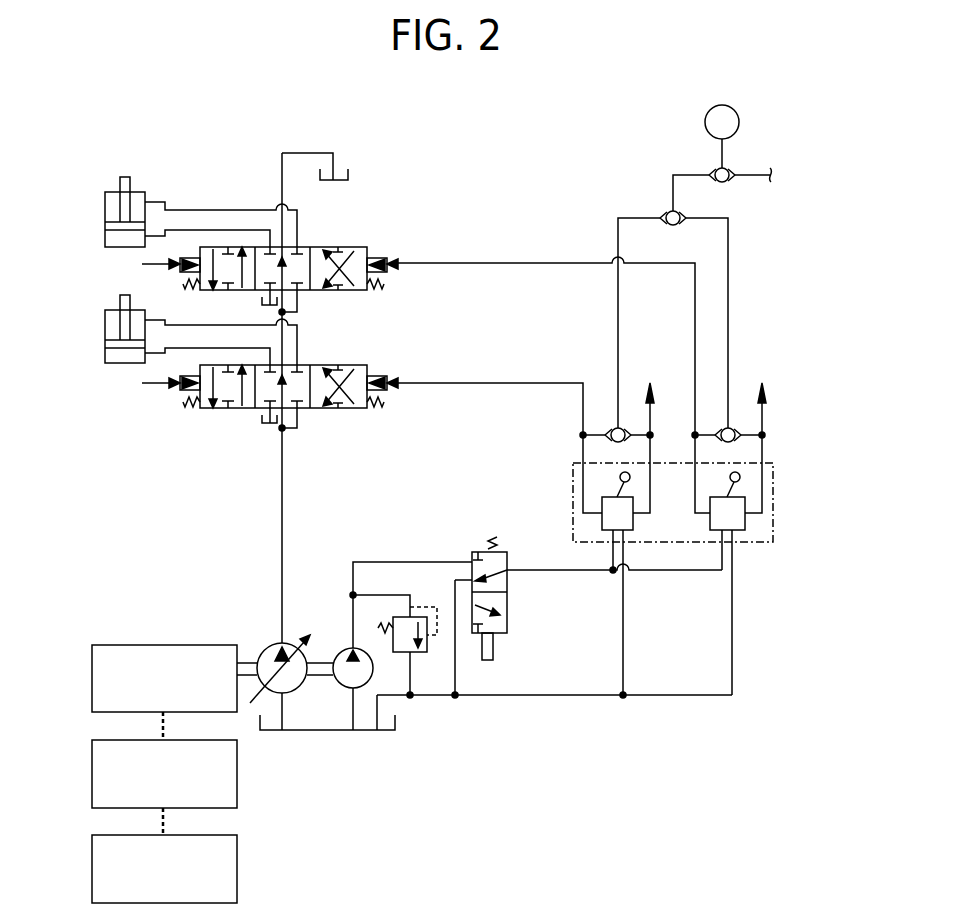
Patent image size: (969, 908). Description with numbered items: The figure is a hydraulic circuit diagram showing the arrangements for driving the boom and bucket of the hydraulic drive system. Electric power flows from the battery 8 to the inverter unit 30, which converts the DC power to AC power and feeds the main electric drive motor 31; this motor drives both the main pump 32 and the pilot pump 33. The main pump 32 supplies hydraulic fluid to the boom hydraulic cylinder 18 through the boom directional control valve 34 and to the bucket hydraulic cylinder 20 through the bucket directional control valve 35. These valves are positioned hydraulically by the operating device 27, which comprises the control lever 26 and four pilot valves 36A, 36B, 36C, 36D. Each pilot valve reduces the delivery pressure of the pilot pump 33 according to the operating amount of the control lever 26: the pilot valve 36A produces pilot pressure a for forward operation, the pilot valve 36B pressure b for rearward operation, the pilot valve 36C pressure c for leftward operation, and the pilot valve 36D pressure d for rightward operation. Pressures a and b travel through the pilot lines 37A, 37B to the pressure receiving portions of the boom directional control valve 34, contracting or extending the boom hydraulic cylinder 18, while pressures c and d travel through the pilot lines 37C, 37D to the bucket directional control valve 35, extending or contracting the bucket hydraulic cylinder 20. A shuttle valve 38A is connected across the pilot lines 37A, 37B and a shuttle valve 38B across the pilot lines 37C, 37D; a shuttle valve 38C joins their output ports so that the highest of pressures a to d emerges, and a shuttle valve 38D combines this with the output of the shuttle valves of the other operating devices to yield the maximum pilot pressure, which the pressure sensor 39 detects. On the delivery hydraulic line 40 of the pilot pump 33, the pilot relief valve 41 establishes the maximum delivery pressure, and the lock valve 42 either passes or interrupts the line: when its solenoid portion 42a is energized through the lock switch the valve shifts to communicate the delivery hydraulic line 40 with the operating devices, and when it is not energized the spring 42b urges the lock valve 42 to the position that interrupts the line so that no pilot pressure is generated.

The battery 8 is at (92, 870).
The boom hydraulic cylinder 18 is at (103, 323).
The bucket hydraulic cylinder 20 is at (103, 204).
The control lever 26 is at (615, 488).
The operating device 27 is at (572, 513).
The inverter unit 30 is at (92, 777).
The main electric drive motor 31 is at (92, 680).
The main pump 32 is at (268, 648).
The pilot pump 33 is at (341, 648).
The boom directional control valve 34 is at (358, 365).
The bucket directional control valve 35 is at (358, 247).
The pilot valve 36A is at (634, 522).
The pilot valve 36B is at (634, 522).
The pilot valve 36C is at (746, 522).
The pilot valve 36D is at (746, 522).
The pilot line 37A is at (652, 408).
The pilot line 37B is at (531, 382).
The pilot line 37C is at (566, 266).
The pilot line 37D is at (764, 408).
The shuttle valve 38A is at (610, 430).
The shuttle valve 38B is at (745, 431).
The shuttle valve 38C is at (660, 214).
The shuttle valve 38D is at (731, 181).
The pressure sensor 39 is at (740, 120).
The delivery hydraulic line 40 is at (420, 562).
The pilot relief valve 41 is at (430, 642).
The lock valve 42 is at (587, 610).
The solenoid portion 42a is at (494, 655).
The spring 42b is at (498, 542).